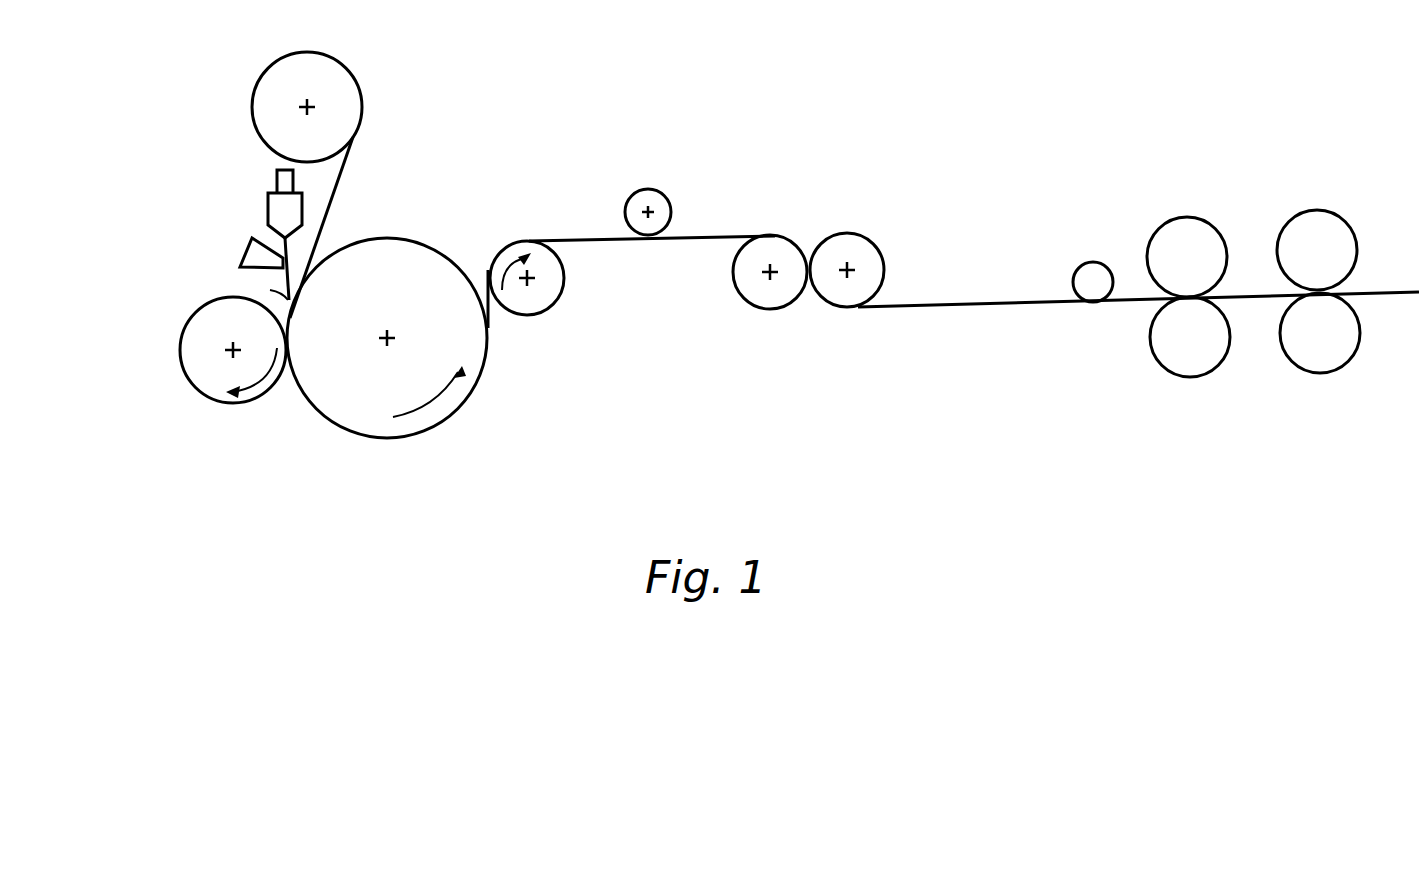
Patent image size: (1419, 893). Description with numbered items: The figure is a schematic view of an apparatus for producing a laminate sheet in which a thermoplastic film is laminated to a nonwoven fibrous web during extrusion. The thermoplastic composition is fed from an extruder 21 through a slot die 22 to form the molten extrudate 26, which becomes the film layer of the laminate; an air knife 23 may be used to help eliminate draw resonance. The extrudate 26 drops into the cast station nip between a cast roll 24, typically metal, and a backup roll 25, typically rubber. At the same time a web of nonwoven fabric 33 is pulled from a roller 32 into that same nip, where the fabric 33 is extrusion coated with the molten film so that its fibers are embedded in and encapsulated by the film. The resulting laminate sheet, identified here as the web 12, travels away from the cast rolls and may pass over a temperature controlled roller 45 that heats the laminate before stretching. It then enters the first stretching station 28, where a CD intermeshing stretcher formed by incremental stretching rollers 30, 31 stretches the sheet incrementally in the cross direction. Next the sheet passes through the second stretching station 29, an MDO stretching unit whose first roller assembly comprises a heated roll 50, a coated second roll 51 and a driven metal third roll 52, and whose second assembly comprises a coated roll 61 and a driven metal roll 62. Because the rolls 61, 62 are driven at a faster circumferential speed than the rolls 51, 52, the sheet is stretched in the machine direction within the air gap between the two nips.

The web 12 is at (572, 242).
The extruder 21 is at (277, 177).
The slot die 22 is at (268, 214).
The air knife 23 is at (250, 244).
The cast roll 24 is at (400, 241).
The backup roll 25 is at (187, 376).
The extrudate 26 is at (270, 290).
The first stretching station 28 is at (875, 400).
The second stretching station 29 is at (1400, 487).
The incremental stretching roller 30 is at (770, 307).
The incremental stretching roller 31 is at (840, 308).
The roller 32 is at (280, 75).
The web of nonwoven fabric 33 is at (363, 97).
The temperature controlled roller 45 is at (652, 189).
The heated roll 50 is at (1092, 270).
The coated second roll 51 is at (1173, 224).
The metal third roll 52 is at (1184, 360).
The coated roll 61 is at (1319, 228).
The driven metal roll 62 is at (1332, 358).